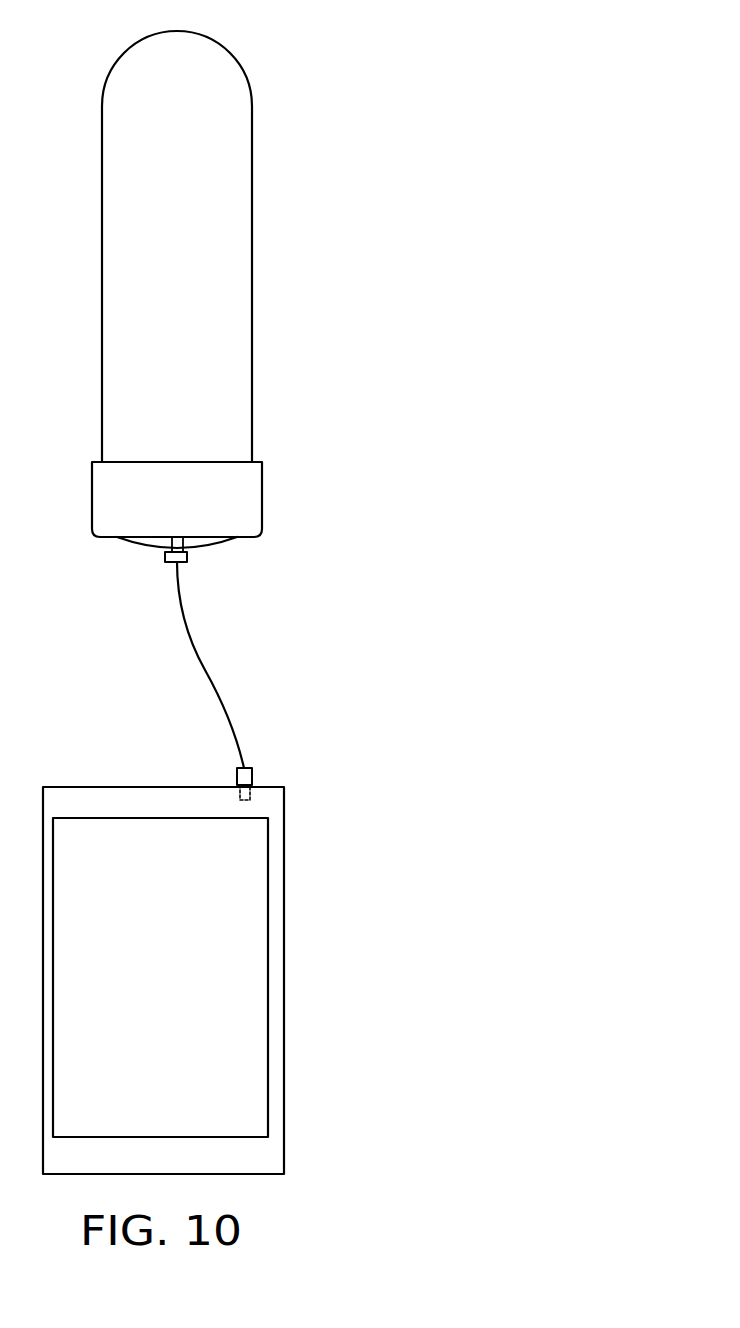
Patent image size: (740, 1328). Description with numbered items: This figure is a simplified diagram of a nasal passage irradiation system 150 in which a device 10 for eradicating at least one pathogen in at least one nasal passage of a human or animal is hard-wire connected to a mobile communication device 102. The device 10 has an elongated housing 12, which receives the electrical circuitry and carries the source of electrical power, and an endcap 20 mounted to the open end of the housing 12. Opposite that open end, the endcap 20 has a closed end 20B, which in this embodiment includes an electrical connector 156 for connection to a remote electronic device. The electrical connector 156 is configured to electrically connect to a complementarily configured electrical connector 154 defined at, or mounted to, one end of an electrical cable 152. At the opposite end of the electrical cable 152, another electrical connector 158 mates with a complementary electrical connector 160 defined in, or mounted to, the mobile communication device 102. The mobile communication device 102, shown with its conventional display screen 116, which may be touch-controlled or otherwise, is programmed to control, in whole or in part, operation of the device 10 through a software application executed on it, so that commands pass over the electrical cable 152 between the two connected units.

The device 10 is at (245, 317).
The housing 12 is at (252, 240).
The endcap 20 is at (92, 508).
The closed end 20B is at (216, 558).
The electrical connector 156 is at (167, 540).
The electrical connector 154 is at (170, 565).
The electrical cable 152 is at (190, 672).
The nasal passage irradiation system 150 is at (252, 668).
The electrical connector 158 is at (253, 779).
The electrical connector 160 is at (251, 790).
The mobile communication device 102 is at (208, 980).
The display screen 116 is at (268, 920).